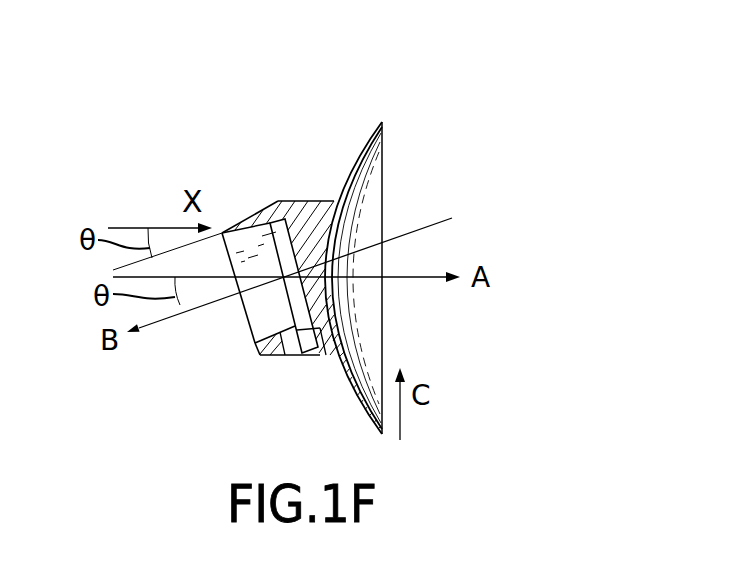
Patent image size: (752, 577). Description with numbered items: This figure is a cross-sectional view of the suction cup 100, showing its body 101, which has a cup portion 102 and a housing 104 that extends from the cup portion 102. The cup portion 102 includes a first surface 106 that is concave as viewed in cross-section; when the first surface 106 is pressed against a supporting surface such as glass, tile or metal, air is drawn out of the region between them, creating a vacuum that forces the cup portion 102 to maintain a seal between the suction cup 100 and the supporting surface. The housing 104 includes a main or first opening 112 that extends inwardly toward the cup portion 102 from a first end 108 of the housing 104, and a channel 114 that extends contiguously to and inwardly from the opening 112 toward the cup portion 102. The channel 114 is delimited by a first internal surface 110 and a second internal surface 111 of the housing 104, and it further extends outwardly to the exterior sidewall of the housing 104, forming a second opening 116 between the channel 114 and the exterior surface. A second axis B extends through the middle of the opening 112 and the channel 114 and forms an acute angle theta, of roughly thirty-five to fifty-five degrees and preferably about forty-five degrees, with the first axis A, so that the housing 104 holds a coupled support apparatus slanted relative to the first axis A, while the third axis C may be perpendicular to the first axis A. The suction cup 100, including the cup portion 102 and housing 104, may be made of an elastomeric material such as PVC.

The suction cup 100 is at (394, 70).
The body 101 is at (162, 112).
The cup portion 102 is at (383, 167).
The housing 104 is at (289, 200).
The first surface 106 is at (355, 227).
The first end 108 is at (255, 345).
The first internal surface 110 is at (298, 240).
The second internal surface 111 is at (283, 346).
The first opening 112 is at (253, 257).
The channel 114 is at (280, 237).
The second opening 116 is at (313, 344).